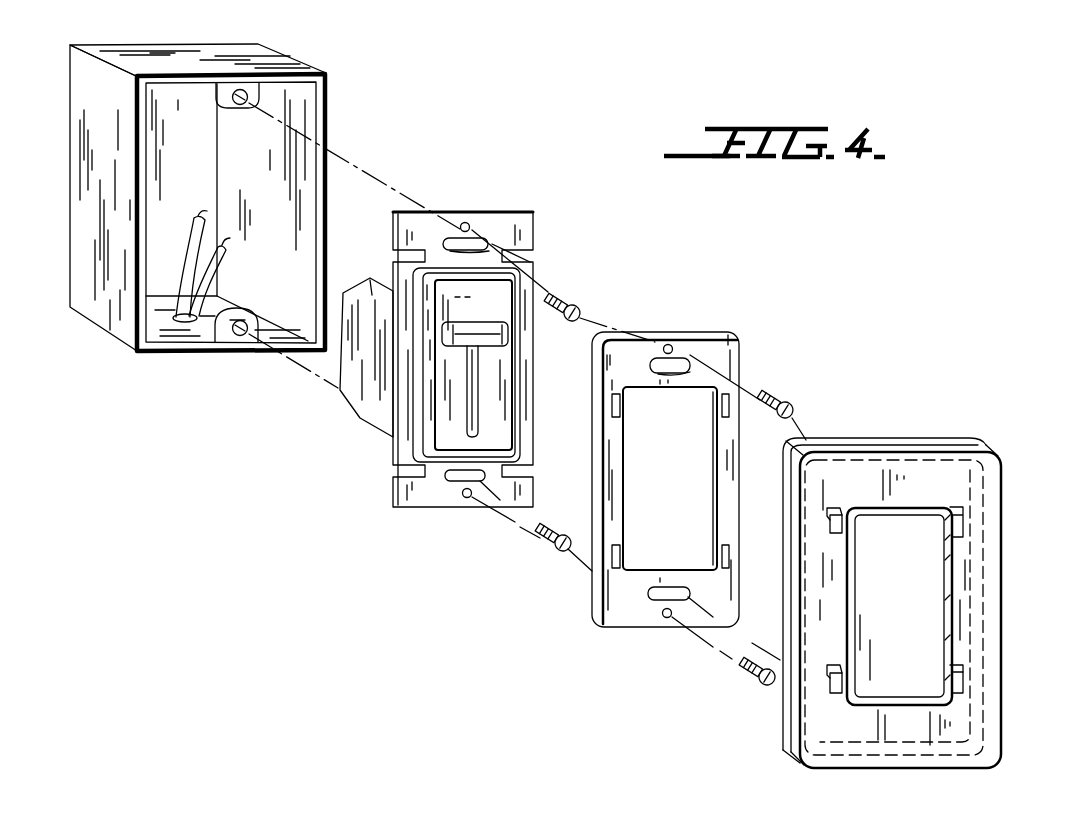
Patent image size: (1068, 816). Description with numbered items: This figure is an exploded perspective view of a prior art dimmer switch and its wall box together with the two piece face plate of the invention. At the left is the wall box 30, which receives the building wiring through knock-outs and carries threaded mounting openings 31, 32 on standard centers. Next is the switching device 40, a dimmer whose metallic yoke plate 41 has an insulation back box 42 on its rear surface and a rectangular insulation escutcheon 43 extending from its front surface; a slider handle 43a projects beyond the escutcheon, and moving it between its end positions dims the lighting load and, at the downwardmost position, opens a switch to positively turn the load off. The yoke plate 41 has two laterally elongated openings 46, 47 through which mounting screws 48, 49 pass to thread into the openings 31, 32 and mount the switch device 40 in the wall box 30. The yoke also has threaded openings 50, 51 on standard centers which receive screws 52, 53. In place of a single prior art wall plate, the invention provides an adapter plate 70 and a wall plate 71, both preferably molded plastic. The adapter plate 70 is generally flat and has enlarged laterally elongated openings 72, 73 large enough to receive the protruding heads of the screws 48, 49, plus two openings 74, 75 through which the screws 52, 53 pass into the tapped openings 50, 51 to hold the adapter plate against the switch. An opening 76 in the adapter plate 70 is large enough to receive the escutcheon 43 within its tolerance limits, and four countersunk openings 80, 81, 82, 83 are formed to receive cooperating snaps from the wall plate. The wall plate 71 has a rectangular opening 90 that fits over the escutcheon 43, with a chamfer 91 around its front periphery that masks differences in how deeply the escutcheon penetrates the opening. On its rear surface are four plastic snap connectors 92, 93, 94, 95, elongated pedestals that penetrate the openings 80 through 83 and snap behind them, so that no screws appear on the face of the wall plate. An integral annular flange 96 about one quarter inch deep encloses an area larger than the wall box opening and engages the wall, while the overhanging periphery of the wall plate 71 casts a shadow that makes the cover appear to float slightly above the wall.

The wall box 30 is at (291, 62).
The threaded mounting opening 31 is at (241, 105).
The threaded mounting opening 32 is at (243, 320).
The switching device 40 is at (547, 250).
The yoke plate 41 is at (512, 232).
The insulation back box 42 is at (375, 413).
The insulation escutcheon 43 is at (522, 342).
The slider handle 43a is at (490, 347).
The laterally elongated opening 46 is at (447, 242).
The laterally elongated opening 47 is at (455, 483).
The mounting screw 48 is at (565, 300).
The mounting screw 49 is at (543, 537).
The threaded opening 50 is at (467, 222).
The threaded opening 51 is at (467, 500).
The screw 52 is at (773, 397).
The screw 53 is at (750, 673).
The adapter plate 70 is at (748, 332).
The wall plate 71 is at (913, 427).
The laterally elongated opening 72 is at (690, 358).
The laterally elongated opening 73 is at (650, 600).
The opening 74 is at (677, 342).
The opening 75 is at (658, 628).
The opening 76 is at (617, 475).
The opening 80 is at (620, 402).
The opening 81 is at (620, 547).
The opening 82 is at (718, 410).
The opening 83 is at (723, 553).
The rectangular opening 90 is at (855, 611).
The chamfer 91 is at (855, 577).
The snap connector 92 is at (838, 513).
The snap connector 93 is at (853, 665).
The snap connector 94 is at (988, 533).
The snap connector 95 is at (992, 680).
The annular flange 96 is at (978, 484).